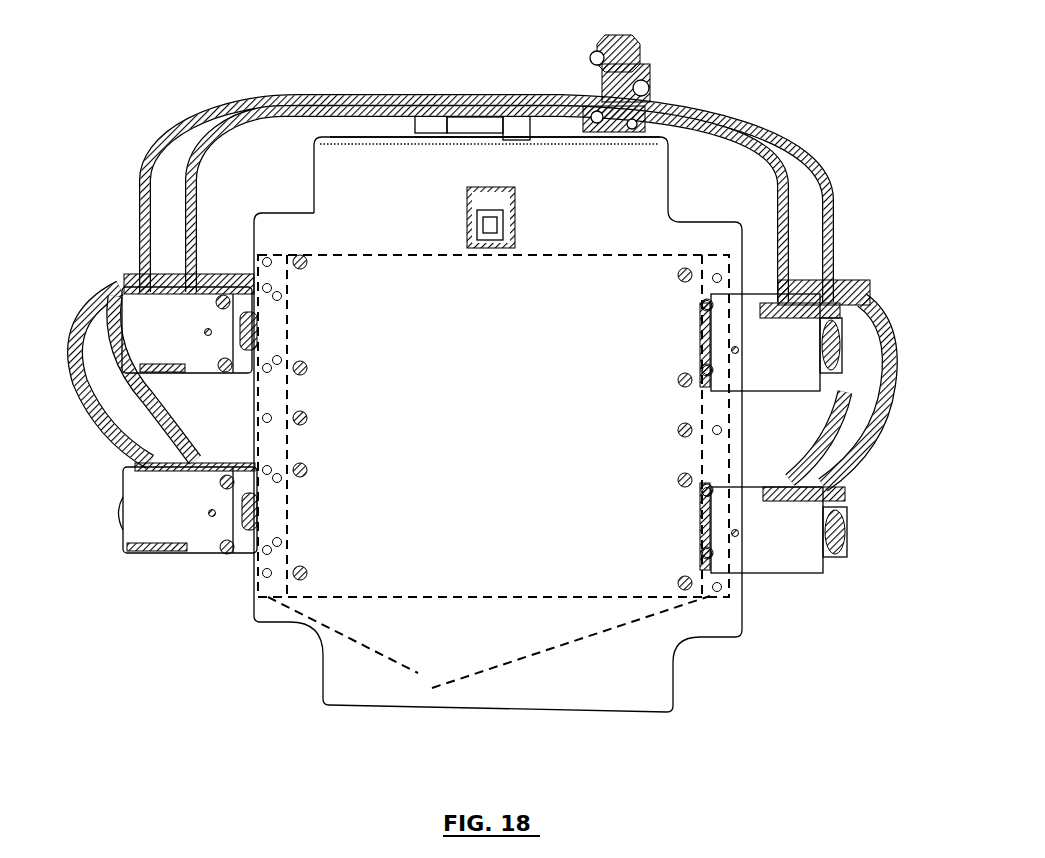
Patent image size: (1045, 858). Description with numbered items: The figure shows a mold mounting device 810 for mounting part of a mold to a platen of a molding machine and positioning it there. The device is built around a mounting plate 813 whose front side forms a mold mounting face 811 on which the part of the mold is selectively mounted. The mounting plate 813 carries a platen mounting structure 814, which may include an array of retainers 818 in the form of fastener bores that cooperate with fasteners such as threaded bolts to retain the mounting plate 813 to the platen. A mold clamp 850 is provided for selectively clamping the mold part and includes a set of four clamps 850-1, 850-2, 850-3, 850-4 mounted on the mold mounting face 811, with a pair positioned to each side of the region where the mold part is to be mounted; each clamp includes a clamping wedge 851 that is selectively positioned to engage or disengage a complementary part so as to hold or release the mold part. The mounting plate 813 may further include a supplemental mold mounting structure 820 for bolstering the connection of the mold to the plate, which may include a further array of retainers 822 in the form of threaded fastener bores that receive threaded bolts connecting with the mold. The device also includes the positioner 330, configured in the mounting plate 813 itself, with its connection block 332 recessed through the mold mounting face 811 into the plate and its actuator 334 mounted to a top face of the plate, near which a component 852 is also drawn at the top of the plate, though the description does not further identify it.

The mold mounting device 810 is at (203, 662).
The mold mounting face 811 is at (340, 660).
The mounting plate 813 is at (443, 707).
The platen mounting structure 814 is at (343, 597).
The retainers 818 is at (681, 486).
The supplemental mold mounting structure 820 is at (489, 644).
The retainers 822 is at (705, 494).
The positioner 330 is at (540, 205).
The connection block 332 is at (483, 195).
The actuator 334 is at (483, 138).
The mold clamp 850 is at (132, 410).
The clamp 850-1 is at (207, 297).
The clamp 850-2 is at (207, 537).
The clamp 850-3 is at (782, 557).
The clamp 850-4 is at (780, 337).
The clamping wedge 851 is at (250, 328).
The connector 852 is at (628, 74).